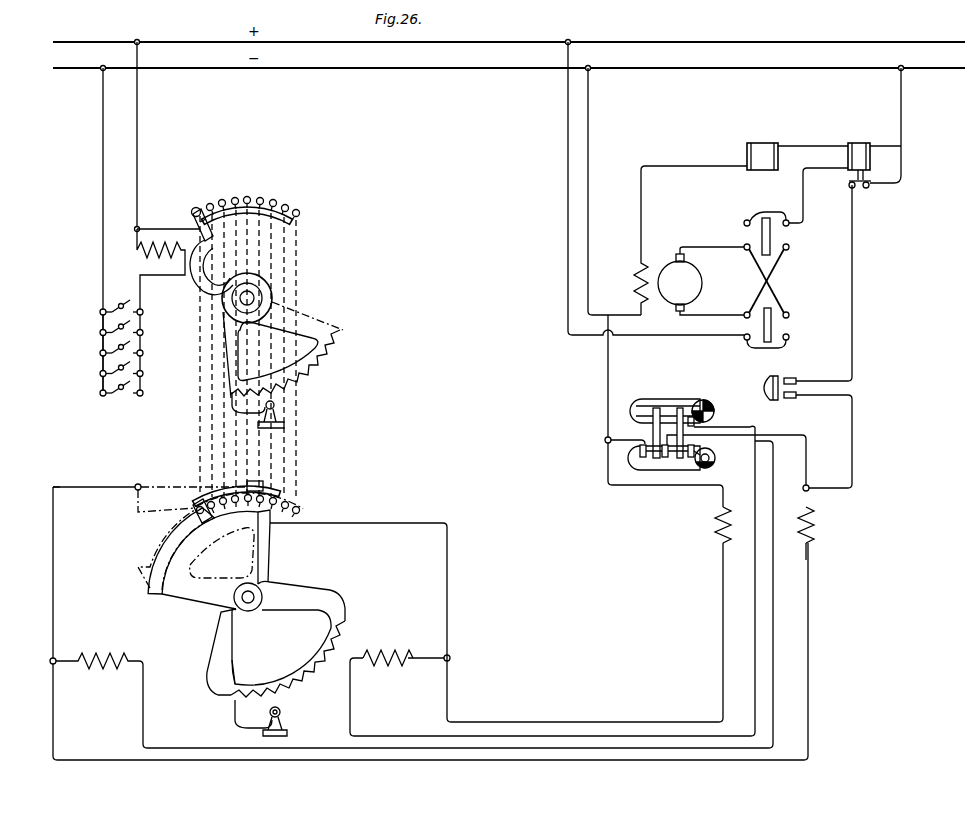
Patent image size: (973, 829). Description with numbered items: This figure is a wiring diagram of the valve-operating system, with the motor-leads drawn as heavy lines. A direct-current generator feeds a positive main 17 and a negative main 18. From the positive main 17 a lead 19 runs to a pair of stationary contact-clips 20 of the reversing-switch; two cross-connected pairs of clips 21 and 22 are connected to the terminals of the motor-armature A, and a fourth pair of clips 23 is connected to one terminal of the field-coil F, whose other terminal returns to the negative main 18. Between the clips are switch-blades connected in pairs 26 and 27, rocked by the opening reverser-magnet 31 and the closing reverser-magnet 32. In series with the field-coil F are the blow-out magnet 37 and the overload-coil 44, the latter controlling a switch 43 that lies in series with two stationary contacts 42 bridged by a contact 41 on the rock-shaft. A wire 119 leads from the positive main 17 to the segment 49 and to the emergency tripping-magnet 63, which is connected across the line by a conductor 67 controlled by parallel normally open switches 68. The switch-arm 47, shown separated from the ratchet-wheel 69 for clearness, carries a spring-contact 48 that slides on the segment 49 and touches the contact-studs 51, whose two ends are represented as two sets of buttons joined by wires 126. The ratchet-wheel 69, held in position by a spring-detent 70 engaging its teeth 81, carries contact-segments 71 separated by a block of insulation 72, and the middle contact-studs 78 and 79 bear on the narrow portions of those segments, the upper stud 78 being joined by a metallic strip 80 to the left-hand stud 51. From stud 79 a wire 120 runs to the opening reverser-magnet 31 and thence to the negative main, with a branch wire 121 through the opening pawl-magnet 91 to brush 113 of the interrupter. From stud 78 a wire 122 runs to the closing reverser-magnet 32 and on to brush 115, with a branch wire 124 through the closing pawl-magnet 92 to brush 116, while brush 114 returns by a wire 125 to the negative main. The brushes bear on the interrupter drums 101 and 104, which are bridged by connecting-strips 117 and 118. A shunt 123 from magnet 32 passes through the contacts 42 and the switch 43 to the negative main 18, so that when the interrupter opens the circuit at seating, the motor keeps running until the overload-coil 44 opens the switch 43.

The positive main 17 is at (455, 42).
The negative main 18 is at (455, 68).
The lead 19 is at (567, 210).
The stationary contact-clip 20 is at (745, 340).
The clip 21 is at (744, 314).
The clip 22 is at (754, 278).
The connected clip 23 is at (744, 223).
The switch-blades 26 is at (774, 310).
The switch-blades 27 is at (771, 225).
The opening reverser-magnet 31 is at (716, 525).
The closing reverser-magnet 32 is at (818, 525).
The blow-out magnet 37 is at (747, 152).
The contact 41 is at (768, 380).
The stationary contacts 42 is at (796, 388).
The switch 43 is at (868, 190).
The overload-coil 44 is at (870, 155).
The switch-arm 47 is at (215, 278).
The spring-contact 48 is at (192, 218).
The segment 49 is at (294, 228).
The contact-studs 51 is at (258, 199).
The tripping-magnet 63 is at (156, 255).
The conductor 67 is at (103, 188).
The normally open switches 68 is at (109, 348).
The ratchet-wheel 69 is at (268, 598).
The spring-detent 70 is at (236, 720).
The contact-segment 71 is at (148, 548).
The block of insulation 72 is at (203, 516).
The contact-stud 78 is at (262, 484).
The contact-stud 79 is at (244, 518).
The metallic strip 80 is at (135, 498).
The teeth 81 is at (318, 655).
The opening pawl-magnet 91 is at (388, 656).
The closing pawl-magnet 92 is at (108, 660).
The drum 101 is at (714, 407).
The drum 104 is at (715, 458).
The brush 113 is at (690, 416).
The brush 114 is at (641, 458).
The brush 115 is at (664, 458).
The brush 116 is at (690, 458).
The connecting-strip 117 is at (656, 408).
The connecting-strip 118 is at (679, 408).
The wire 119 is at (139, 131).
The wire 120 is at (448, 553).
The branch wire 121 is at (430, 657).
The wire 122 is at (53, 540).
The shunt 123 is at (852, 440).
The branch wire 124 is at (85, 643).
The wire 125 is at (612, 437).
The wires 126 is at (297, 272).
The motor-armature A is at (688, 283).
The field-coil F is at (632, 284).